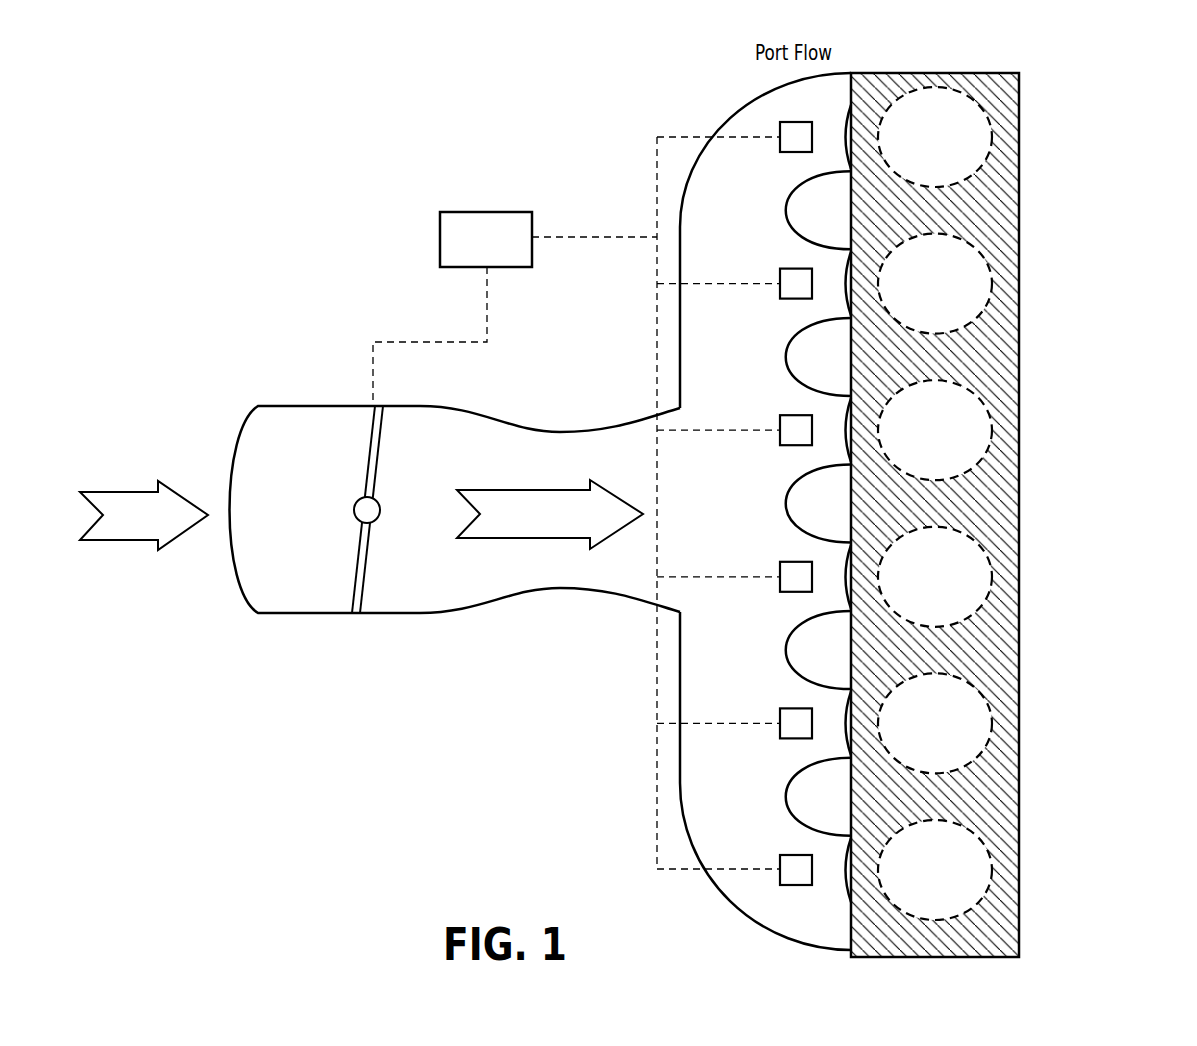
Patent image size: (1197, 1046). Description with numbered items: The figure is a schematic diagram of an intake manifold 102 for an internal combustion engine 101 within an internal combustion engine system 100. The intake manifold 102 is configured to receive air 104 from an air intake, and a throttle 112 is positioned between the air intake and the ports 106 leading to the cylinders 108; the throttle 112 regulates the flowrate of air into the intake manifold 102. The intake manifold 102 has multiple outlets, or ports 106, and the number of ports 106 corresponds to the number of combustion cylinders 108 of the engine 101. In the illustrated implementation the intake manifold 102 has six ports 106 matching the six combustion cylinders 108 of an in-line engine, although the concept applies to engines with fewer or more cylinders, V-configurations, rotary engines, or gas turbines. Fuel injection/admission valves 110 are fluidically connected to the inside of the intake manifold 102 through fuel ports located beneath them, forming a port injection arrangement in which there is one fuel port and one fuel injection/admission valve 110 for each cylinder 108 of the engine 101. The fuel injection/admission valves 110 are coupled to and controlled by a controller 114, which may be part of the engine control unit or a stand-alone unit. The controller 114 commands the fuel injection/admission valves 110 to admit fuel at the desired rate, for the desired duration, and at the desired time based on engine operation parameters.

The internal combustion engine system 100 is at (40, 99).
The internal combustion engine 101 is at (1100, 627).
The intake manifold 102 is at (697, 883).
The air 104 is at (547, 533).
The port 106 is at (848, 140).
The combustion cylinder 108 is at (993, 133).
The fuel injection/admission valve 110 is at (797, 120).
The throttle 112 is at (285, 592).
The controller 114 is at (457, 216).